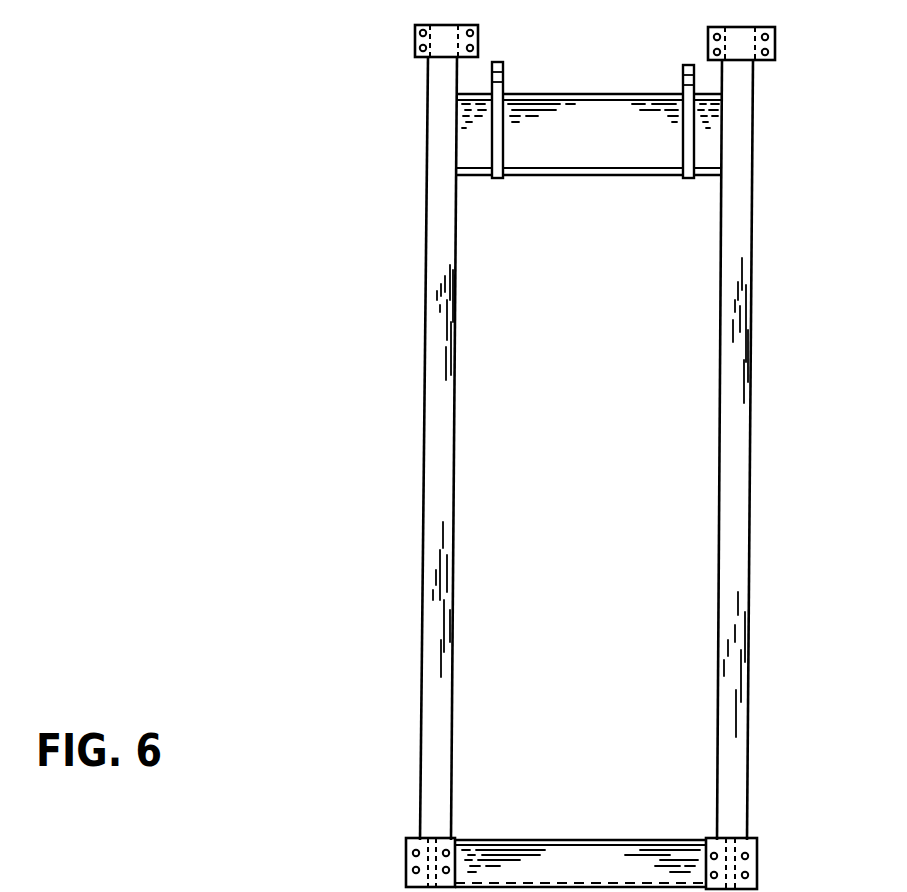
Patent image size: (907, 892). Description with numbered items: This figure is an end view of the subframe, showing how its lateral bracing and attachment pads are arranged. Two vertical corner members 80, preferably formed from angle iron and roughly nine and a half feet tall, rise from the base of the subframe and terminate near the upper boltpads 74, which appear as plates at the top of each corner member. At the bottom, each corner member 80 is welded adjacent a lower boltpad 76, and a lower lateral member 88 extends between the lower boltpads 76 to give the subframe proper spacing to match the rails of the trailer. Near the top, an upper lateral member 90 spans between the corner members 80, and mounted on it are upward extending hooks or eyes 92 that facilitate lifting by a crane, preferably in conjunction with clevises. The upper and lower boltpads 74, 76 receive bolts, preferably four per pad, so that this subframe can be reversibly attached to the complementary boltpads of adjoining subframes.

The upper boltpad 74 is at (415, 44).
The lower boltpad 76 is at (405, 852).
The vertical corner member 80 is at (437, 488).
The lower lateral member 88 is at (578, 847).
The upper lateral member 90 is at (580, 152).
The lifting eye 92 is at (503, 70).